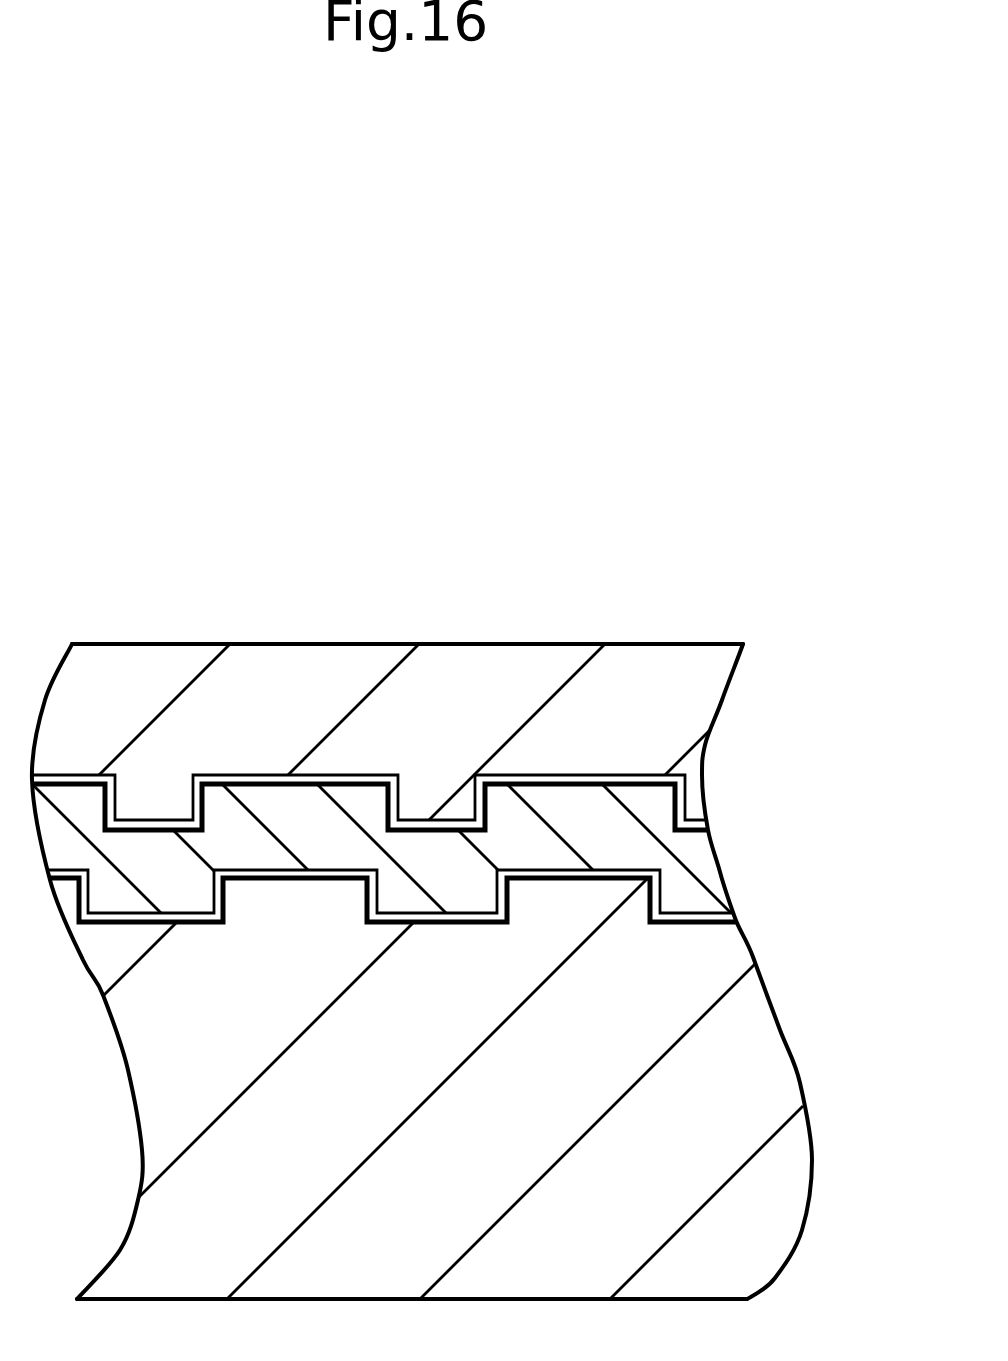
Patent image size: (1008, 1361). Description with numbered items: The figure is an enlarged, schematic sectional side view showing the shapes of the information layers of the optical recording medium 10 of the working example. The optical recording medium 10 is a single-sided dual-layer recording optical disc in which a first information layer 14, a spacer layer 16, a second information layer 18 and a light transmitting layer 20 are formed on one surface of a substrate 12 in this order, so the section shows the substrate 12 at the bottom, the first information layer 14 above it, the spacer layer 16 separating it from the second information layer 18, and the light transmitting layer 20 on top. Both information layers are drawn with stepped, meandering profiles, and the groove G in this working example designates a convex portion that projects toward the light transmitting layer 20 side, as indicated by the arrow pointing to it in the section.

The optical recording medium 10 is at (405, 447).
The substrate 12 is at (800, 1083).
The first information layer 14 is at (733, 920).
The spacer layer 16 is at (723, 875).
The second information layer 18 is at (710, 827).
The light transmitting layer 20 is at (707, 733).
The groove G is at (609, 772).